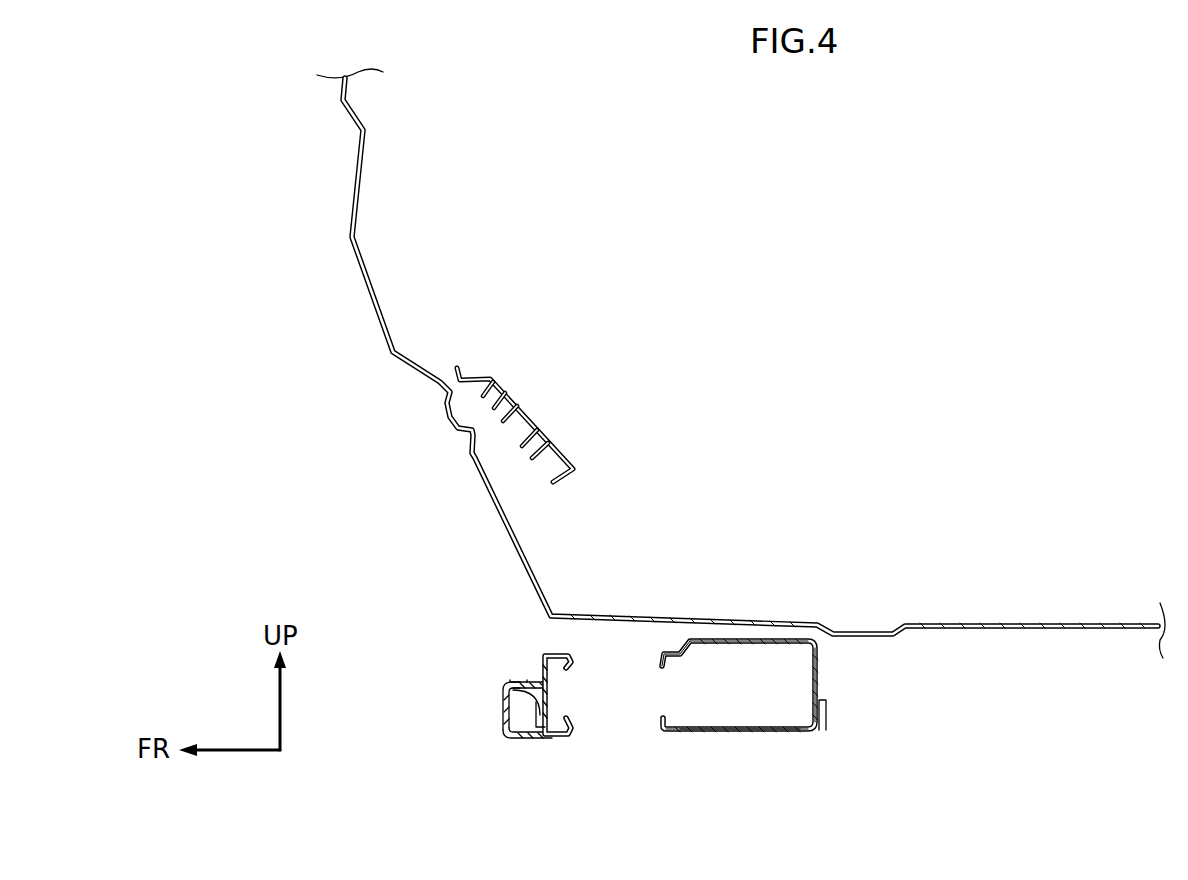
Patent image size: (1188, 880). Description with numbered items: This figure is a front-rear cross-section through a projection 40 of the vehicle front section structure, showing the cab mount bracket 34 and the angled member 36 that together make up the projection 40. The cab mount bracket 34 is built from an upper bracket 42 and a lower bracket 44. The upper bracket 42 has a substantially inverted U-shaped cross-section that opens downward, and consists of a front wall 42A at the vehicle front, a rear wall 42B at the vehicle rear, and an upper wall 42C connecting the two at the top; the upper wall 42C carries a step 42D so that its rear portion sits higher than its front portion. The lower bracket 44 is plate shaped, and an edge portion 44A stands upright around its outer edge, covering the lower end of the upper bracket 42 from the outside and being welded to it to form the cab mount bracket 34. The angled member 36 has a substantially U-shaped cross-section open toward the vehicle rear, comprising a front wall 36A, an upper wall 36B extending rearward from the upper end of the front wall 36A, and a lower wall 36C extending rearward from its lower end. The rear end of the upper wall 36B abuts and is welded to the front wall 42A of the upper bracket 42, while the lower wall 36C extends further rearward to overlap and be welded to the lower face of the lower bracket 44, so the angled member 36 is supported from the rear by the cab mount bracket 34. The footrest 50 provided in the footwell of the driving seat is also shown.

The cab mount bracket 34 is at (804, 744).
The angled member 36 is at (741, 448).
The front wall 36A is at (503, 707).
The upper wall 36B is at (527, 680).
The lower wall 36C is at (532, 742).
The projection 40 is at (698, 714).
The upper bracket 42 is at (698, 706).
The front wall 42A is at (548, 690).
The rear wall 42B is at (822, 678).
The upper wall 42C is at (738, 642).
The step 42D is at (678, 652).
The lower bracket 44 is at (741, 742).
The edge portion 44A is at (825, 708).
The footrest 50 is at (566, 400).